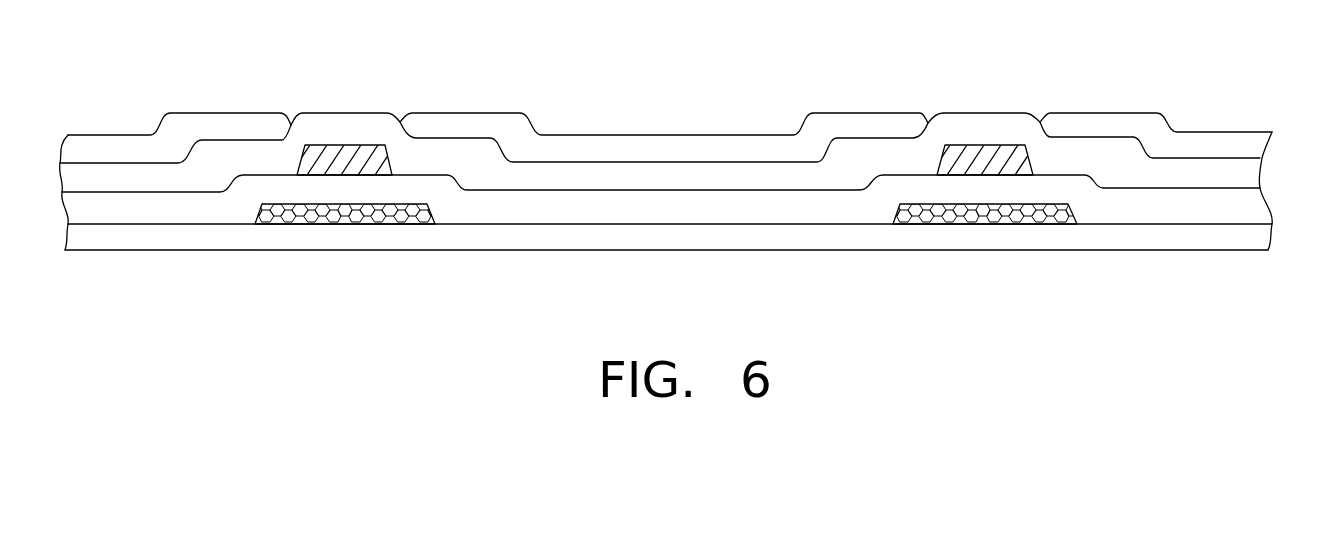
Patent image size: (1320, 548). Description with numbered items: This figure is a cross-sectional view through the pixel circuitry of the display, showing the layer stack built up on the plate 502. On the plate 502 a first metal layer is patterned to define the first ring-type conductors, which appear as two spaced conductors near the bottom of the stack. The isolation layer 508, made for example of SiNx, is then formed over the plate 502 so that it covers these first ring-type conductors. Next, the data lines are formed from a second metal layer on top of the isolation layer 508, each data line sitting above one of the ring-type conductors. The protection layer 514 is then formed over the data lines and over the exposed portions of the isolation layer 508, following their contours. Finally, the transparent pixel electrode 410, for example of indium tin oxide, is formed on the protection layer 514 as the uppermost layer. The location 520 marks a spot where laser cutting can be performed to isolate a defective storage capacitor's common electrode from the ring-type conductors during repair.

The transparent pixel electrode 410 is at (140, 153).
The laser cutting location 520 is at (1188, 150).
The protection layer 514 is at (1235, 178).
The isolation layer 508 is at (1157, 212).
The plate 502 is at (1220, 233).